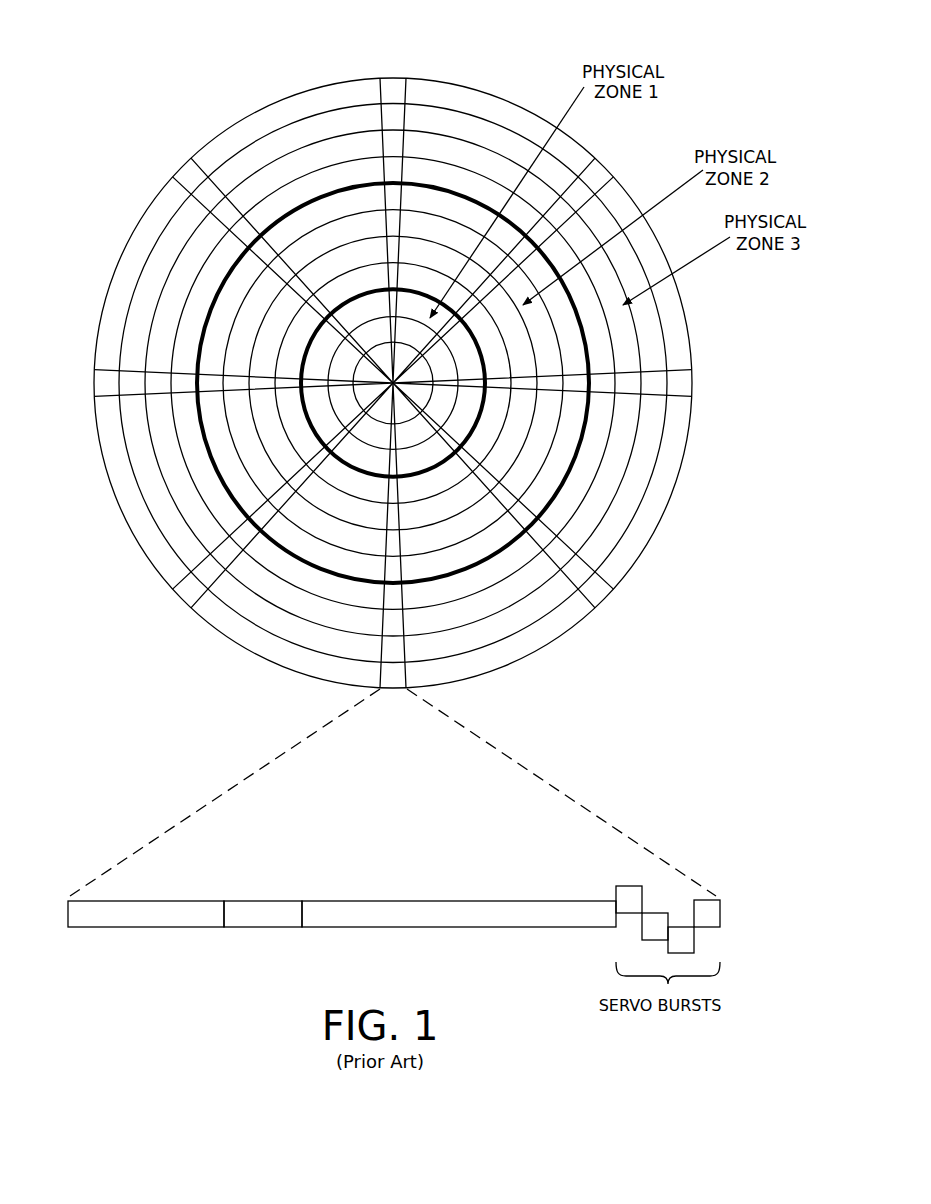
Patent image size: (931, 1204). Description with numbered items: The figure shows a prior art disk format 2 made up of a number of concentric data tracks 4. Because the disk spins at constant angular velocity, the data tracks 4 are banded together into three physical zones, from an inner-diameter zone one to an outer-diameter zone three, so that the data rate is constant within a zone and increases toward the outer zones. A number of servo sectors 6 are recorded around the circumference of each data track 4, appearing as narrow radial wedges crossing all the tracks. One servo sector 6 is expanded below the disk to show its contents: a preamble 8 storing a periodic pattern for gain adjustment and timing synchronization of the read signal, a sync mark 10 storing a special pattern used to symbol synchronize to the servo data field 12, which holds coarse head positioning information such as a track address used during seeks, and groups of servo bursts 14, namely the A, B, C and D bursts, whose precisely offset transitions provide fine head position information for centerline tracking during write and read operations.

The disk format 2 is at (392, 393).
The data tracks 4 is at (495, 138).
The servo sectors 6 is at (392, 393).
The preamble 8 is at (128, 928).
The sync mark 10 is at (262, 928).
The servo data field 12 is at (448, 928).
The servo bursts 14 is at (603, 868).